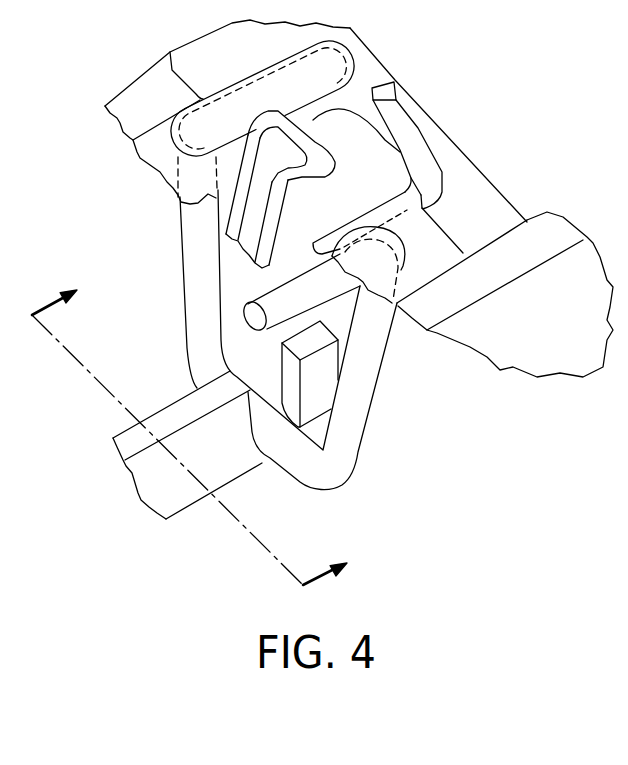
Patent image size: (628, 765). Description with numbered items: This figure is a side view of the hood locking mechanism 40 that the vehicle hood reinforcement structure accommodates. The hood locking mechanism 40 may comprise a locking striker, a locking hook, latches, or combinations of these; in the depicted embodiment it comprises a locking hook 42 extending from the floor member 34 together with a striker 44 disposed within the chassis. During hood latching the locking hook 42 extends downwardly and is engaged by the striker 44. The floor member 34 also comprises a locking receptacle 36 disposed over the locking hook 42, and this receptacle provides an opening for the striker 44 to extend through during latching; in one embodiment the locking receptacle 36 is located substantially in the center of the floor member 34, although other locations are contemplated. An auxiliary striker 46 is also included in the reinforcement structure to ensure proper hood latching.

The floor member 34 is at (453, 182).
The locking receptacle 36 is at (375, 157).
The hood locking mechanism 40 is at (213, 523).
The locking hook 42 is at (373, 408).
The striker 44 is at (158, 490).
The auxiliary striker 46 is at (260, 113).